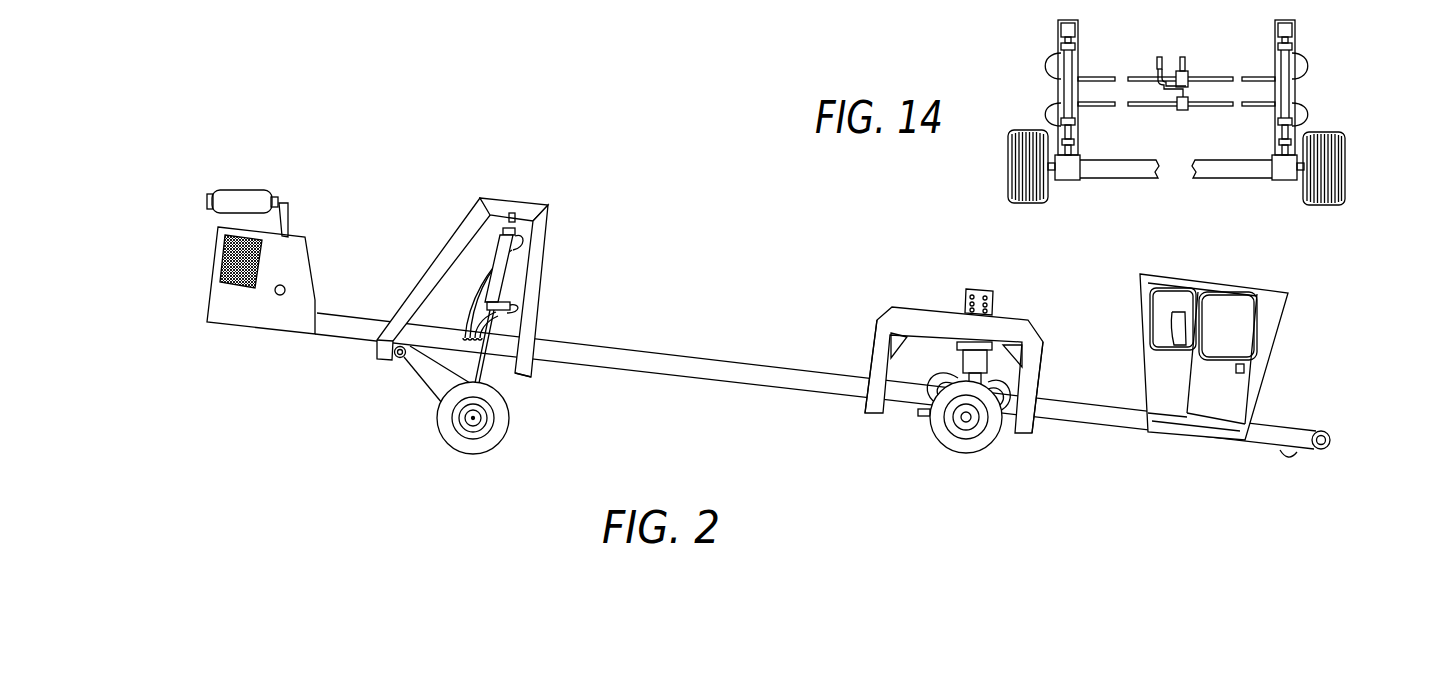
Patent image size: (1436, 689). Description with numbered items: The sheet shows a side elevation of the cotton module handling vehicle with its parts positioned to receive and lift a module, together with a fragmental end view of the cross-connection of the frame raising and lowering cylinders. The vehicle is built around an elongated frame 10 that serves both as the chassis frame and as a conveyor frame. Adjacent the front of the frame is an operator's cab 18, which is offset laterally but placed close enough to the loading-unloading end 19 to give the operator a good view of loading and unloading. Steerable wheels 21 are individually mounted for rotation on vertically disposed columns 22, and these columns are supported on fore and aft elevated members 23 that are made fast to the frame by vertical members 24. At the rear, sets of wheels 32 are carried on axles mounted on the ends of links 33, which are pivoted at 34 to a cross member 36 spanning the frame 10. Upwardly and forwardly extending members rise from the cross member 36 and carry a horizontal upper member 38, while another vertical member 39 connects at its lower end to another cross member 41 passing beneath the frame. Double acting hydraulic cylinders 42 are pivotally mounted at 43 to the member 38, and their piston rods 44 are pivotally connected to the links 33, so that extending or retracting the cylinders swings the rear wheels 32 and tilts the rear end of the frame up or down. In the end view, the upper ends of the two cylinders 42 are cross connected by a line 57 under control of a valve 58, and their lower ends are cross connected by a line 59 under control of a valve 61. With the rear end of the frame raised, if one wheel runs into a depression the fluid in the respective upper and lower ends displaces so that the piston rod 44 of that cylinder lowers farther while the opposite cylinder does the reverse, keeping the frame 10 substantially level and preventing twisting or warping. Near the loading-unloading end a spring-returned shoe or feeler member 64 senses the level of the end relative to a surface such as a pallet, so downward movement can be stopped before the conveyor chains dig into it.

In FIG. 2, the elongated frame 10 is at (737, 362).
In FIG. 2, the operator's cab 18 is at (1280, 329).
In FIG. 2, the loading-unloading end 19 is at (1331, 440).
In FIG. 2, the steerable wheels 21 is at (985, 440).
In FIG. 2, the vertically disposed columns 22 is at (986, 293).
In FIG. 2, the fore and aft elevated members 23 is at (903, 320).
In FIG. 2, the vertical members 24 is at (878, 343).
In FIG. 2, the rear sets of wheels 32 is at (499, 417).
In FIG. 14, the rear sets of wheels 32 is at (1010, 167).
In FIG. 2, the links 33 is at (424, 377).
In FIG. 2, the pivot 34 is at (397, 359).
In FIG. 2, the cross member 36 is at (385, 352).
In FIG. 2, the horizontal upper member 38 is at (496, 203).
In FIG. 2, the vertical member 39 is at (536, 283).
In FIG. 2, the cross member 41 is at (522, 367).
In FIG. 2, the double acting hydraulic cylinders 42 is at (516, 264).
In FIG. 14, the double acting hydraulic cylinders 42 is at (1066, 90).
In FIG. 2, the pivotal mounting 43 is at (512, 211).
In FIG. 2, the piston rods 44 is at (500, 333).
In FIG. 14, the piston rods 44 is at (1074, 143).
In FIG. 14, the line 57 is at (1097, 78).
In FIG. 14, the valve 58 is at (1188, 75).
In FIG. 14, the line 59 is at (1138, 107).
In FIG. 14, the valve 61 is at (1183, 110).
In FIG. 2, the feeler member 64 is at (1289, 452).